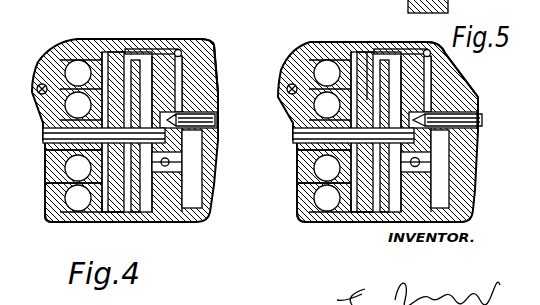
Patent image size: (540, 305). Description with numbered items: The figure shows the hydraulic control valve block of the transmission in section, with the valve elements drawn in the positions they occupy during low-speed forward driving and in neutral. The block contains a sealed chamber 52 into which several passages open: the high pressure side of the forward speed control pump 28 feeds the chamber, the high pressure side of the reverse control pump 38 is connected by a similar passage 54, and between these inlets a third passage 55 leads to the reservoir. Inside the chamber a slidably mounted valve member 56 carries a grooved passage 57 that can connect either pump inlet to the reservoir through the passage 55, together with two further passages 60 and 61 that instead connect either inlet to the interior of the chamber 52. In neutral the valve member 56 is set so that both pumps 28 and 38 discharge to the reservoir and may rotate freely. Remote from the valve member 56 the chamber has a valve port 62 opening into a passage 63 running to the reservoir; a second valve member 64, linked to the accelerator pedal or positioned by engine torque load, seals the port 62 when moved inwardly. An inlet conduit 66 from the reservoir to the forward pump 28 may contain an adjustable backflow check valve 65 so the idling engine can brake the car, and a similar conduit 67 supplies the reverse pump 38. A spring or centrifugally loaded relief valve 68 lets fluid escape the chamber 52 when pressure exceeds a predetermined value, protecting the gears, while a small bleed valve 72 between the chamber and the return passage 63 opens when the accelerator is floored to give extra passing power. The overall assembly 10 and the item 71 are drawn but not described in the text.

In FIG. 4, the housing 10 is at (47, 9).
In FIG. 4, the forward speed control pump 28 is at (78, 60).
In FIG. 5, the forward speed control pump 28 is at (322, 104).
In FIG. 4, the sealed chamber 52 is at (118, 51).
In FIG. 5, the sealed chamber 52 is at (400, 196).
In FIG. 4, the relief valve 68 is at (178, 49).
In FIG. 5, the relief valve 68 is at (426, 49).
In FIG. 4, the valve port 62 is at (206, 68).
In FIG. 5, the valve port 62 is at (453, 78).
In FIG. 4, the second valve member 64 is at (210, 113).
In FIG. 5, the second valve member 64 is at (473, 94).
In FIG. 4, the inlet conduit 66 is at (34, 54).
In FIG. 5, the inlet conduit 66 is at (287, 90).
In FIG. 4, the passage 60 is at (127, 132).
In FIG. 5, the passage 60 is at (376, 132).
In FIG. 4, the third passage 55 is at (43, 131).
In FIG. 5, the third passage 55 is at (293, 133).
In FIG. 4, the conduit 67 is at (46, 182).
In FIG. 5, the conduit 67 is at (298, 180).
In FIG. 4, the reverse control pump 38 is at (47, 203).
In FIG. 5, the reverse control pump 38 is at (296, 160).
In FIG. 4, the passage 54 is at (72, 224).
In FIG. 5, the passage 54 is at (297, 212).
In FIG. 4, the passage 61 is at (96, 223).
In FIG. 5, the passage 61 is at (370, 190).
In FIG. 4, the valve member 56 is at (184, 218).
In FIG. 5, the valve member 56 is at (334, 222).
In FIG. 4, the bleed valve 72 is at (183, 178).
In FIG. 5, the bleed valve 72 is at (430, 152).
In FIG. 4, the passage 63 is at (193, 148).
In FIG. 5, the passage 63 is at (445, 168).
In FIG. 5, the backflow check valve 65 is at (288, 62).
In FIG. 5, the grooved passage 57 is at (367, 52).
In FIG. 5, the member 71 is at (286, 9).